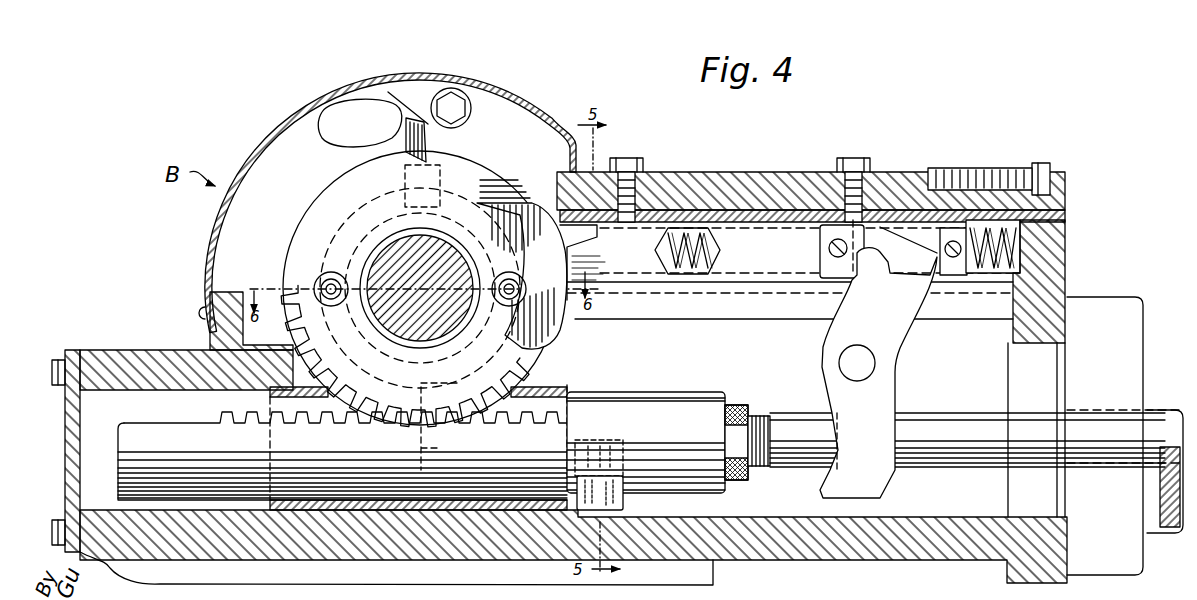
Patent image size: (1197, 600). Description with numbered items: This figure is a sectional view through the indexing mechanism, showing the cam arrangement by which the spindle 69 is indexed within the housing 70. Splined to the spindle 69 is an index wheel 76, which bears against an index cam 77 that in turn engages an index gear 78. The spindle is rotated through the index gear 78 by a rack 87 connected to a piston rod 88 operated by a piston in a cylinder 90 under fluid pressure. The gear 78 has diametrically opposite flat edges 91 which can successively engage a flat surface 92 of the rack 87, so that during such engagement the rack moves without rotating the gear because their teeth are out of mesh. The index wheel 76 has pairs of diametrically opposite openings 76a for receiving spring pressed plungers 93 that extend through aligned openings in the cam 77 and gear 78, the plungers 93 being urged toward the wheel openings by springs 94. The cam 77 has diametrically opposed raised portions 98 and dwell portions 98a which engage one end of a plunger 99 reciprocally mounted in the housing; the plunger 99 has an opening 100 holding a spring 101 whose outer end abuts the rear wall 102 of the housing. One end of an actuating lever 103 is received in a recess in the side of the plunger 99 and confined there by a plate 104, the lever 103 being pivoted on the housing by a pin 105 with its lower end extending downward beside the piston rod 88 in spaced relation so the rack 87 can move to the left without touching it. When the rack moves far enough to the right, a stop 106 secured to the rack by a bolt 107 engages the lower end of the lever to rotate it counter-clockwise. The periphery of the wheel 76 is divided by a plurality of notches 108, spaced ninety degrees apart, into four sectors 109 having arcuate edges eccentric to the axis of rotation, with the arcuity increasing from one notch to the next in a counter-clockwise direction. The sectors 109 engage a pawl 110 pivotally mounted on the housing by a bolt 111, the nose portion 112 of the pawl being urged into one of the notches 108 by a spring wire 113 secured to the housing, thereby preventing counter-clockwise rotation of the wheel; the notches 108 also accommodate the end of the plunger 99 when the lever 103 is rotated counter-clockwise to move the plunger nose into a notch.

The spindle 69 is at (420, 288).
The housing 70 is at (868, 562).
The index wheel 76 is at (503, 180).
The openings 76a is at (420, 288).
The index cam 77 is at (534, 202).
The index gear 78 is at (334, 428).
The rack 87 is at (186, 432).
The piston rod 88 is at (1028, 420).
The cylinder 90 is at (1157, 348).
The flat edges 91 is at (282, 276).
The flat surface 92 is at (144, 420).
The spring pressed plungers 93 is at (332, 272).
The springs 94 is at (346, 302).
The raised portions 98 is at (298, 240).
The dwell portions 98a is at (546, 345).
The plunger 99 is at (668, 228).
The opening 100 is at (745, 282).
The spring 101 is at (1020, 252).
The rear wall 102 is at (1055, 226).
The actuating lever 103 is at (888, 374).
The plate 104 is at (833, 283).
The pin 105 is at (848, 362).
The stop 106 is at (624, 501).
The bolt 107 is at (606, 441).
The notches 108 is at (420, 173).
The sectors 109 is at (462, 164).
The pawl 110 is at (424, 116).
The bolt 111 is at (461, 99).
The nose portion 112 is at (392, 168).
The spring wire 113 is at (320, 136).